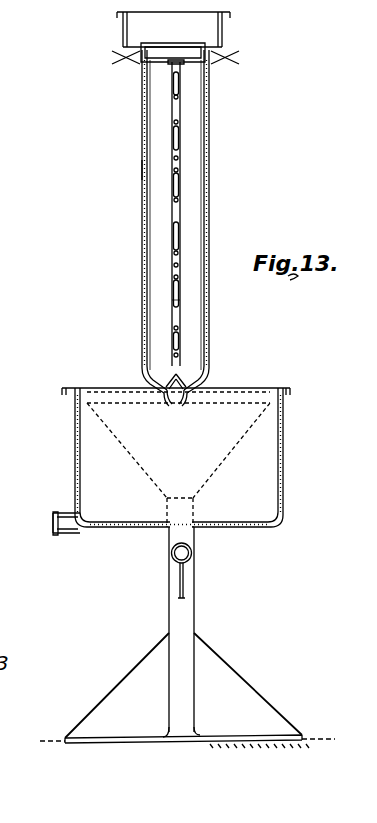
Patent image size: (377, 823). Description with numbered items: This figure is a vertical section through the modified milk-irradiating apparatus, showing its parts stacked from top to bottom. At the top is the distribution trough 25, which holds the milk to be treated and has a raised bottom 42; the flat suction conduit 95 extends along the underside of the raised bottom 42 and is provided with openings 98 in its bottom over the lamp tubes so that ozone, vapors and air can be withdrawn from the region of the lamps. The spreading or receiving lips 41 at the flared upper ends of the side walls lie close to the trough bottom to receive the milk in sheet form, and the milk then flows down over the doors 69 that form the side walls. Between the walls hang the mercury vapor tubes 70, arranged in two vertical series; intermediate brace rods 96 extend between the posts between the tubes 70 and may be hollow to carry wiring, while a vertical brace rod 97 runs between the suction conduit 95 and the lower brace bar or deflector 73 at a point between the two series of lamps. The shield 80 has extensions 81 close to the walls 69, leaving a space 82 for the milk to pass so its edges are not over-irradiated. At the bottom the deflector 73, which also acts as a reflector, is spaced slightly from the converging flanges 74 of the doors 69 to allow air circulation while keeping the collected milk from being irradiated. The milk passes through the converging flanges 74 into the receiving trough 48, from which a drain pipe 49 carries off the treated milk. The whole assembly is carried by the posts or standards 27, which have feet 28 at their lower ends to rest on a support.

The top or distribution trough 25 is at (223, 36).
The raised bottom 42 is at (176, 44).
The spreading or receiving lips 41 is at (134, 60).
The suction conduit 95 is at (201, 58).
The shield 80 is at (174, 221).
The doors 69 is at (208, 238).
The extensions 81 is at (152, 142).
The space 82 is at (143, 168).
The openings 98 is at (170, 61).
The mercury vapor tubes 70 is at (179, 97).
The intermediate brace rods 96 is at (180, 158).
The vertical brace rod 97 is at (176, 203).
The lower brace bar or deflector 73 is at (183, 380).
The converging flanges 74 is at (167, 404).
The receiving or catching trough 48 is at (281, 470).
The drain pipe 49 is at (80, 533).
The posts or standards 27 is at (188, 537).
The feet 28 is at (180, 660).